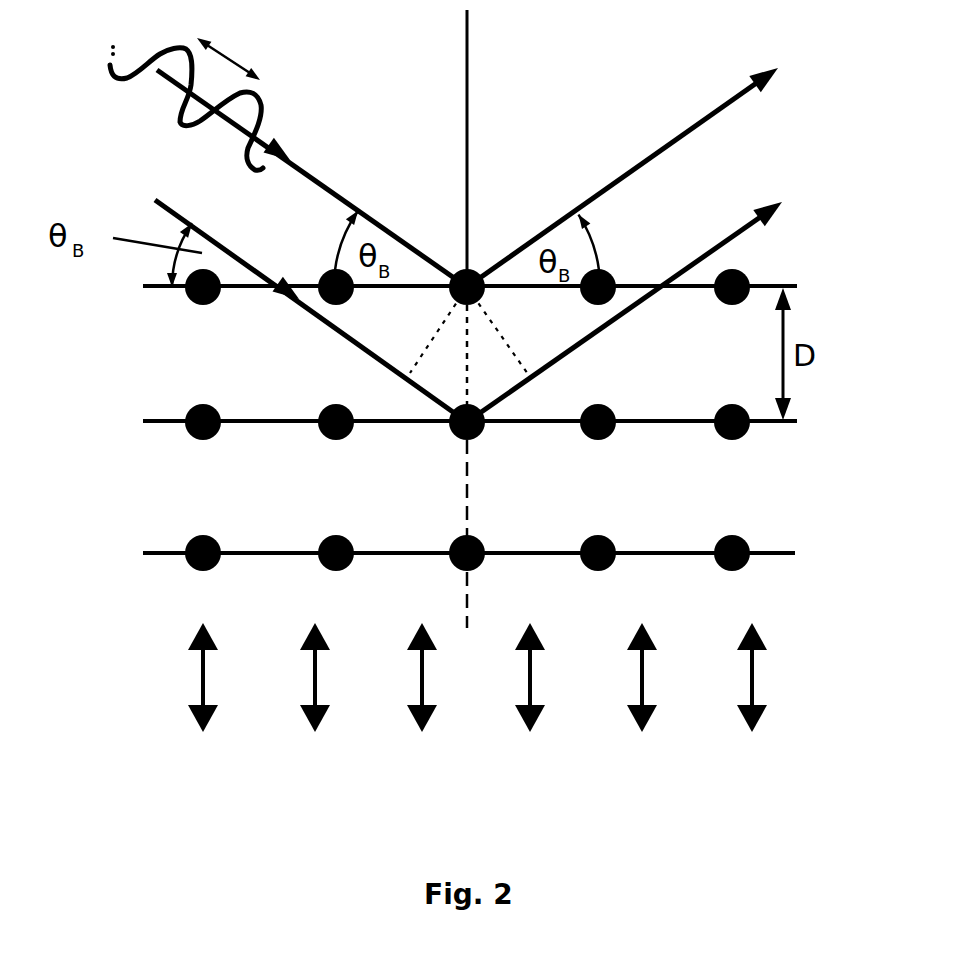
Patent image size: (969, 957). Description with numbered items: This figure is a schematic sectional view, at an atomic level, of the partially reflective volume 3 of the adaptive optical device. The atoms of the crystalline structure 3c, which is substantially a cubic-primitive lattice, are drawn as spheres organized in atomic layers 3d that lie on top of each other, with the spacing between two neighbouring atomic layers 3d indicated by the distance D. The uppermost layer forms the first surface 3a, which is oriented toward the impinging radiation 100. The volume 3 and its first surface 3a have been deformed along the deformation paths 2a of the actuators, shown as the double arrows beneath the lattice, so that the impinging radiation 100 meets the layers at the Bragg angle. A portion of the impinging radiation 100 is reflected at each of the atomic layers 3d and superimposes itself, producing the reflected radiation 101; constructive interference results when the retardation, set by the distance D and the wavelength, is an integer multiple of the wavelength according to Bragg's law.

The impinging radiation 100 is at (288, 224).
The reflected radiation 101 is at (624, 245).
The partially reflective volume 3 is at (462, 435).
The first surface 3a is at (770, 283).
The atomic layers 3d is at (670, 421).
The crystalline structure 3c is at (792, 535).
The deformation paths 2a is at (207, 685).